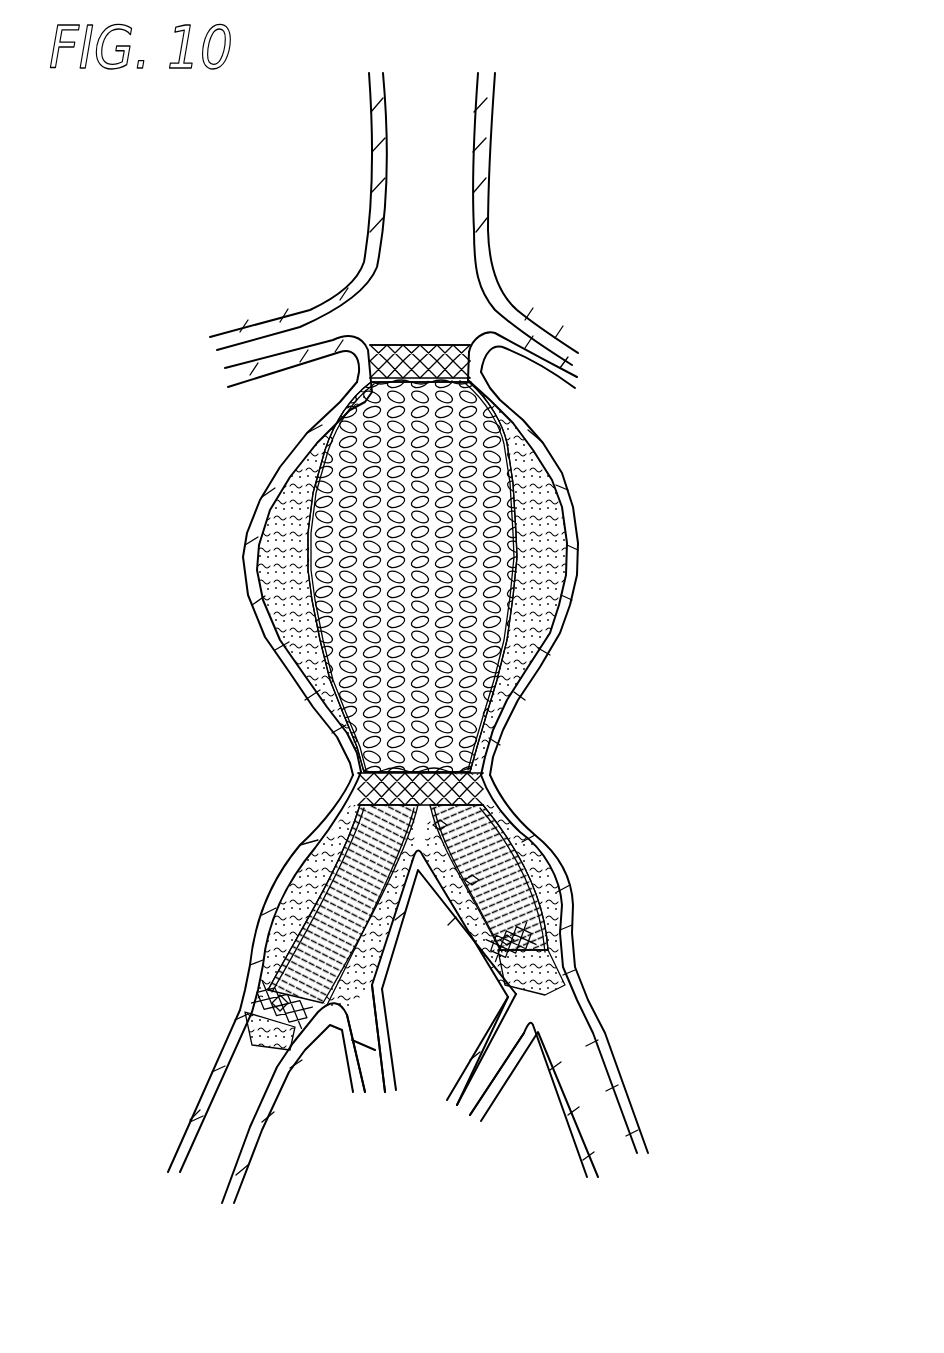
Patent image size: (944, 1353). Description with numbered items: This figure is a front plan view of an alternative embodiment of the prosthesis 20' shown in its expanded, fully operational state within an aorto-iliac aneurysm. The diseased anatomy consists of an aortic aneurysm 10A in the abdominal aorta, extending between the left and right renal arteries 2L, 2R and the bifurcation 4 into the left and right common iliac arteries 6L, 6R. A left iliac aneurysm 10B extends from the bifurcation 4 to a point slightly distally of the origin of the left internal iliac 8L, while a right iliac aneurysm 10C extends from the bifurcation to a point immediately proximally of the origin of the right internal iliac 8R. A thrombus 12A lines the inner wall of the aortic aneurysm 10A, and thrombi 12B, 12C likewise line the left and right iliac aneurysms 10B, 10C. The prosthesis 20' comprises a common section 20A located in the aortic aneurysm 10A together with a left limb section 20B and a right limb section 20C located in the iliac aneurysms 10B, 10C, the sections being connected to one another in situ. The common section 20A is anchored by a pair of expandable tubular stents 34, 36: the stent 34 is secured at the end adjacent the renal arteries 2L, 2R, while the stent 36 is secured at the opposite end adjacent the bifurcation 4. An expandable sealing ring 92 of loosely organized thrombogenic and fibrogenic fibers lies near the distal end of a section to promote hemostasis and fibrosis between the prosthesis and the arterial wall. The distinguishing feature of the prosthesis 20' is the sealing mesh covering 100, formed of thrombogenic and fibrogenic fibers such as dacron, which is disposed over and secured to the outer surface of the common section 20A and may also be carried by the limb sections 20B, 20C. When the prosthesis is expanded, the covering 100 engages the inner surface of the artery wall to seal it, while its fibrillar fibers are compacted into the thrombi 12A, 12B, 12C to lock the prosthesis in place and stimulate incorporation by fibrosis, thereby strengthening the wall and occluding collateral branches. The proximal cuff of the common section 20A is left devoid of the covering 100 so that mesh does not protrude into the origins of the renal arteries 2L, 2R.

The bifurcation 4 is at (350, 790).
The left renal artery 2L is at (258, 345).
The right renal artery 2R is at (557, 343).
The left common iliac artery 6L is at (218, 1153).
The right common iliac artery 6R is at (610, 1123).
The left internal iliac artery 8L is at (358, 1065).
The right internal iliac artery 8R is at (478, 1088).
The aortic aneurysm 10A is at (575, 573).
The left iliac aneurysm 10B is at (292, 847).
The right iliac aneurysm 10C is at (555, 850).
The thrombus 12A is at (540, 530).
The thrombus 12B is at (287, 883).
The thrombus 12C is at (548, 880).
The prosthesis 20' is at (460, 610).
The common section 20A is at (462, 637).
The left limb section 20B is at (240, 1038).
The right limb section 20C is at (546, 988).
The expandable tubular stent 34 is at (413, 345).
The expandable tubular stent 36 is at (488, 792).
The sealing ring 92 is at (250, 1017).
The sealing mesh covering 100 is at (513, 470).